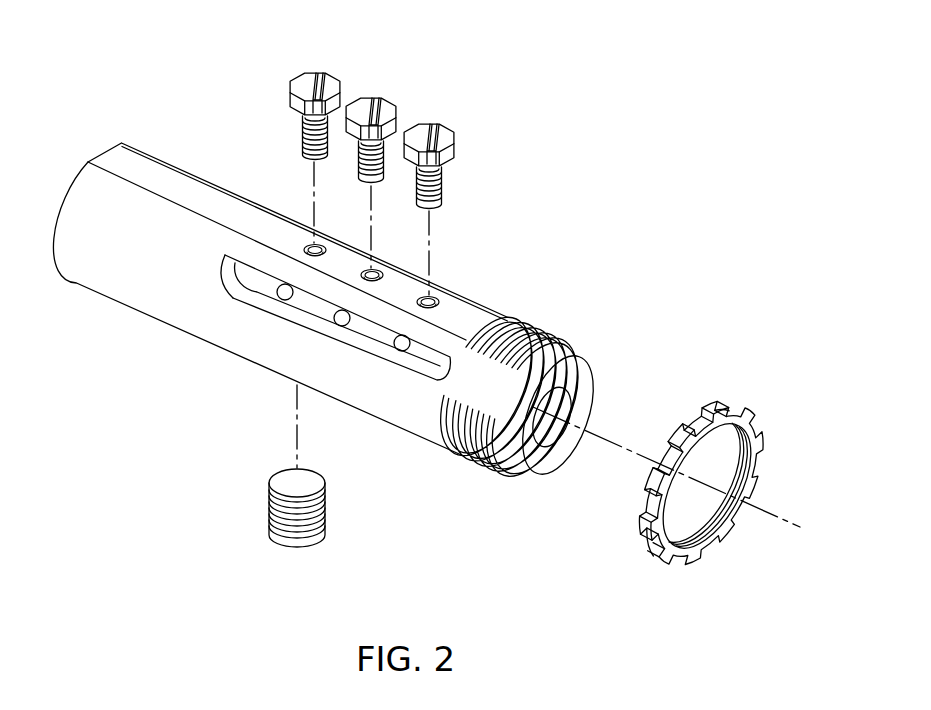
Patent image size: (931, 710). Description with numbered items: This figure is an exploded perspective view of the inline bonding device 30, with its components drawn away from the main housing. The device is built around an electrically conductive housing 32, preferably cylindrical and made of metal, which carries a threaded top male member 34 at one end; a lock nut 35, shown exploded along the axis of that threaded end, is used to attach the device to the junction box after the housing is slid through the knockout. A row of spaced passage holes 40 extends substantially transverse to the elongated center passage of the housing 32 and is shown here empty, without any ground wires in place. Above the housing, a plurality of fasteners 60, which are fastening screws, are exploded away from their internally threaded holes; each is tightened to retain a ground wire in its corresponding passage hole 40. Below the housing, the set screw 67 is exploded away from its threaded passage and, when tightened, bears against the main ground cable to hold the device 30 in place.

The inline bonding device 30 is at (138, 340).
The electrically conductive housing 32 is at (152, 167).
The threaded top male member 34 is at (543, 347).
The lock nut 35 is at (706, 546).
The passage holes 40 is at (340, 321).
The fasteners 60 is at (342, 75).
The set screw 67 is at (270, 513).